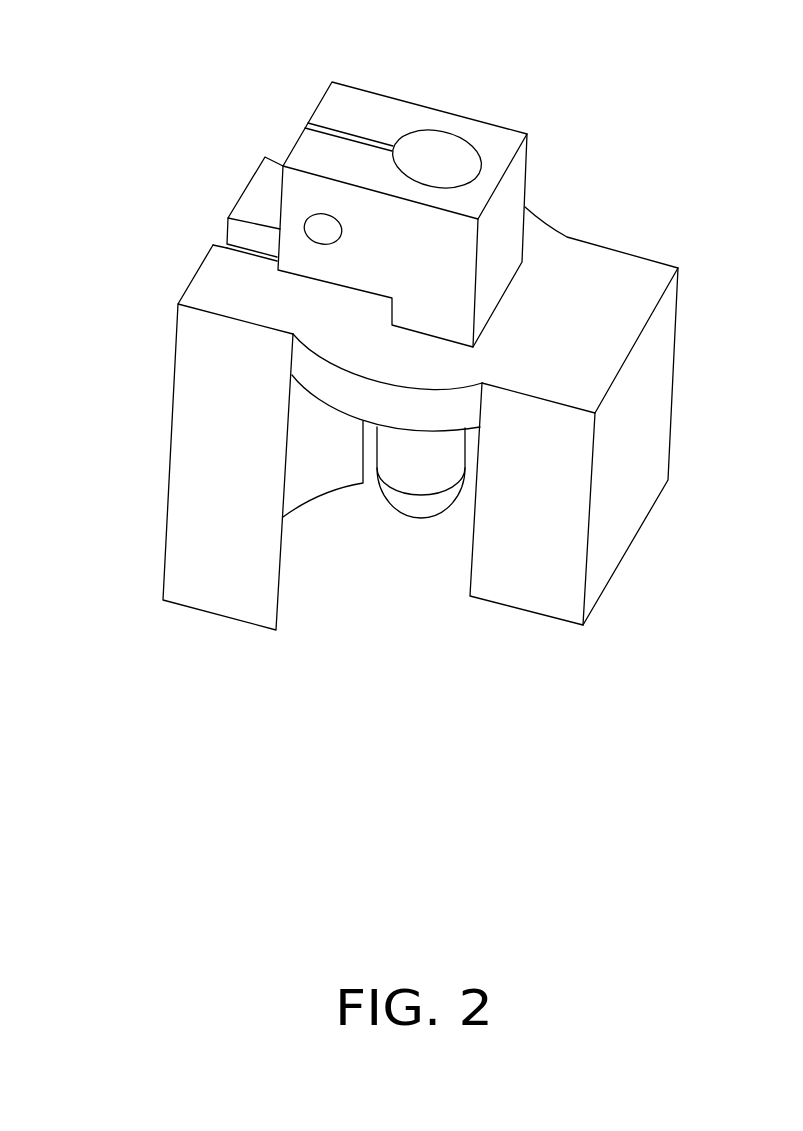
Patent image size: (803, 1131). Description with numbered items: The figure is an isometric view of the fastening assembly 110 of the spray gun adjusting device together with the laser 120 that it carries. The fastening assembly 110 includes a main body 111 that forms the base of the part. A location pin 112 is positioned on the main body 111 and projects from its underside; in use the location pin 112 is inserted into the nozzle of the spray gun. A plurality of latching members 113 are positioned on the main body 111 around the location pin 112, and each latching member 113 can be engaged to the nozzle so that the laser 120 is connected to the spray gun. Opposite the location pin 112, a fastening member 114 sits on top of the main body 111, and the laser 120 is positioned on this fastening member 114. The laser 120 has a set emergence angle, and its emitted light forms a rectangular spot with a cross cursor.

The fastening assembly 110 is at (170, 56).
The main body 111 is at (320, 378).
The location pin 112 is at (417, 472).
The latching member 113 is at (518, 585).
The fastening member 114 is at (500, 207).
The laser 120 is at (440, 145).